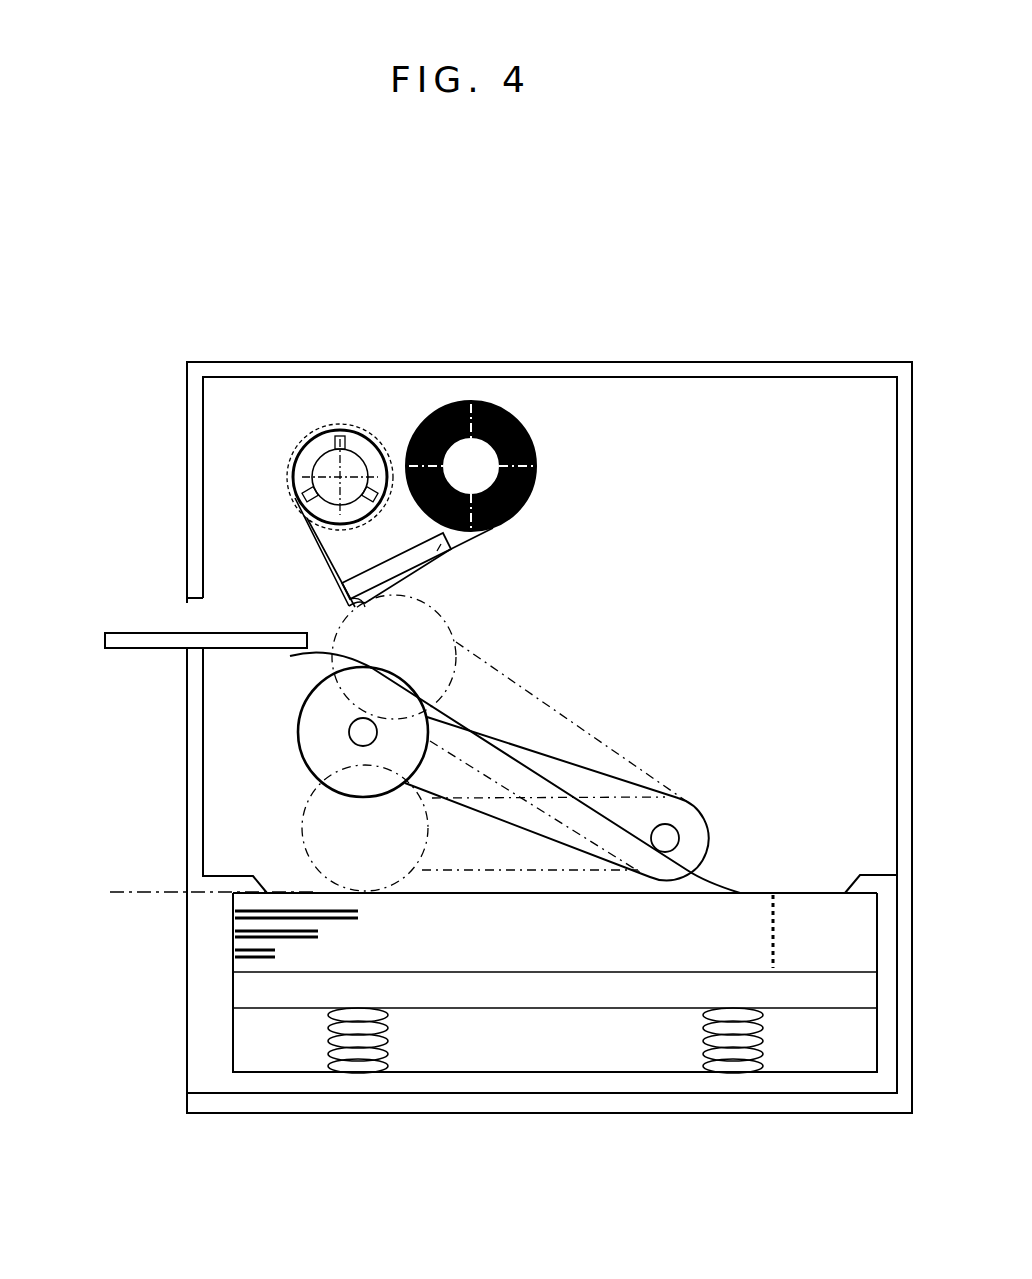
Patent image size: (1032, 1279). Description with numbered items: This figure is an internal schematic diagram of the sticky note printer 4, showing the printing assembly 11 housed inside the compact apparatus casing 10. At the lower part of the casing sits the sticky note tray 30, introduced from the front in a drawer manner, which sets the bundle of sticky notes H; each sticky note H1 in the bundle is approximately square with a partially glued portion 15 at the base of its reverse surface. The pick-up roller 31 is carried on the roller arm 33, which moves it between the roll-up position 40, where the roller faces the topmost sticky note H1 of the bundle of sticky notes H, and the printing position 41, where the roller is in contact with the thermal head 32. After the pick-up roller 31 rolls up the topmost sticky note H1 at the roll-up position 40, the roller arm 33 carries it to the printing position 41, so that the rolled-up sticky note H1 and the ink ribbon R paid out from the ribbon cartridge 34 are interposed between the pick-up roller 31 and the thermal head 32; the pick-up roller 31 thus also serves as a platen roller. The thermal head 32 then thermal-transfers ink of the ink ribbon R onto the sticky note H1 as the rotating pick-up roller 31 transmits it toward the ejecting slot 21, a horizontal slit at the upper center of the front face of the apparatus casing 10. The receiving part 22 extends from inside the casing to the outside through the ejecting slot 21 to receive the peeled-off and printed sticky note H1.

The sticky note printer 4 is at (551, 302).
The apparatus casing 10 is at (645, 361).
The printing assembly 11 is at (687, 529).
The glued portion 15 is at (820, 907).
The ejecting slot 21 is at (200, 608).
The receiving part 22 is at (122, 640).
The sticky note tray 30 is at (186, 1043).
The pick-up roller 31 is at (307, 738).
The thermal head 32 is at (447, 544).
The roller arm 33 is at (583, 763).
The ribbon cartridge 34 is at (557, 440).
The roll-up position 40 is at (159, 898).
The printing position 41 is at (340, 600).
The bundle of sticky notes H is at (747, 907).
The sticky note H1 is at (333, 657).
The ink ribbon R is at (457, 567).